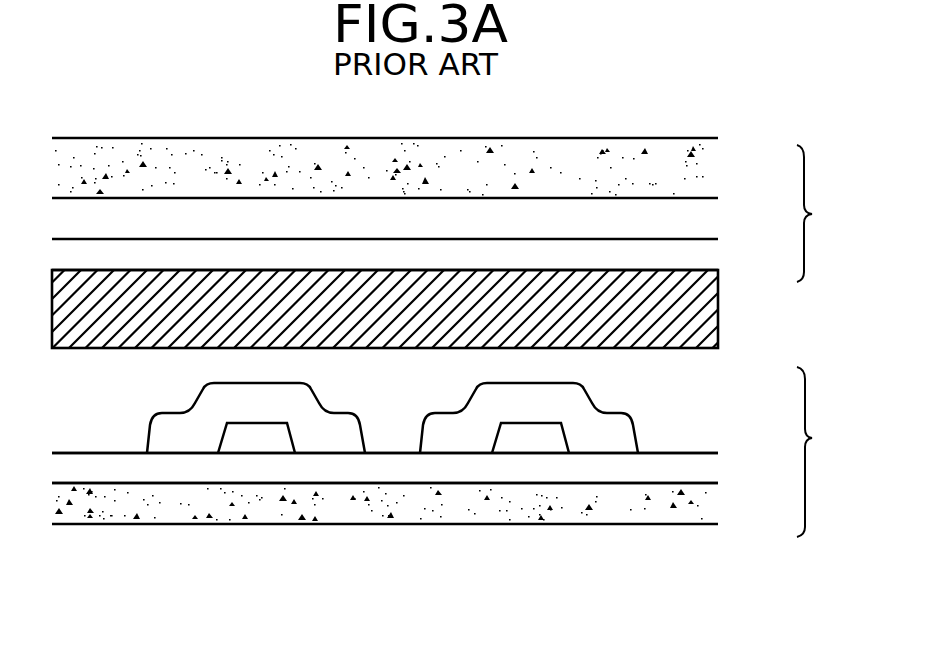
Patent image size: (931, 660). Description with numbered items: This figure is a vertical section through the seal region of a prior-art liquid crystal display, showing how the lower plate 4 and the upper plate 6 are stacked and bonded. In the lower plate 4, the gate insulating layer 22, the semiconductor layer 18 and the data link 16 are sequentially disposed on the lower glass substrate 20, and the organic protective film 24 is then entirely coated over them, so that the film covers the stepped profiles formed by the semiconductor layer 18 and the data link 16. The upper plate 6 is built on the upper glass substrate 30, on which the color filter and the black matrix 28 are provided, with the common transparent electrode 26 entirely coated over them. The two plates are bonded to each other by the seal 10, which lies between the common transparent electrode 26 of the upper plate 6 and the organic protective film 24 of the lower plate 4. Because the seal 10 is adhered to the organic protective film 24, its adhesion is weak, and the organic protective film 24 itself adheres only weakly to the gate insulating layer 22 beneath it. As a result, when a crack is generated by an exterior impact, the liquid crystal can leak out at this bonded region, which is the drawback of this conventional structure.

The upper glass substrate 30 is at (706, 169).
The black matrix 28 is at (706, 223).
The common transparent electrode 26 is at (710, 262).
The seal 10 is at (710, 314).
The upper plate 6 is at (816, 213).
The organic protective film 24 is at (710, 394).
The gate insulating layer 22 is at (708, 469).
The lower glass substrate 20 is at (708, 510).
The semiconductor layer 18 is at (537, 438).
The data link 16 is at (618, 438).
The lower plate 4 is at (822, 452).